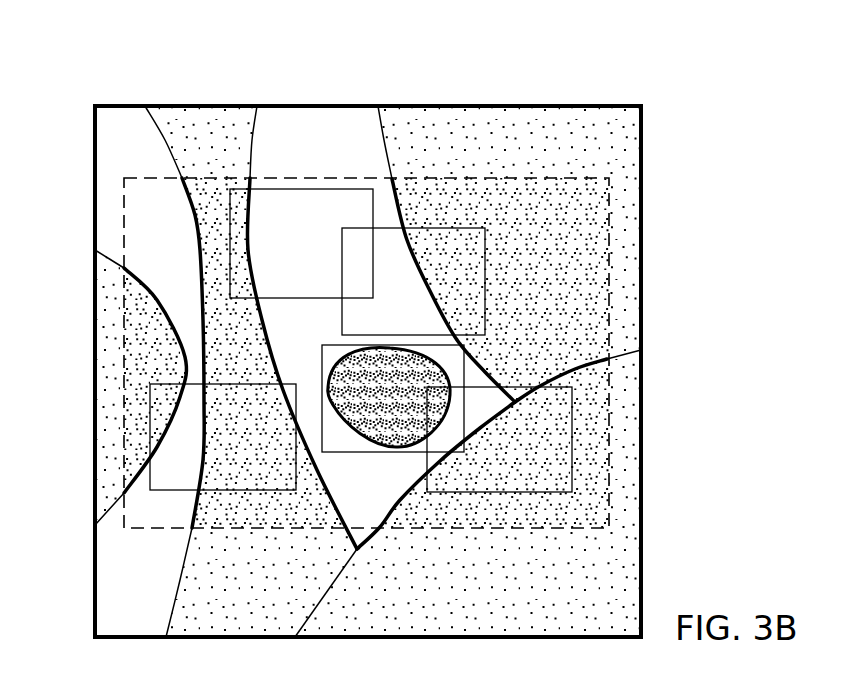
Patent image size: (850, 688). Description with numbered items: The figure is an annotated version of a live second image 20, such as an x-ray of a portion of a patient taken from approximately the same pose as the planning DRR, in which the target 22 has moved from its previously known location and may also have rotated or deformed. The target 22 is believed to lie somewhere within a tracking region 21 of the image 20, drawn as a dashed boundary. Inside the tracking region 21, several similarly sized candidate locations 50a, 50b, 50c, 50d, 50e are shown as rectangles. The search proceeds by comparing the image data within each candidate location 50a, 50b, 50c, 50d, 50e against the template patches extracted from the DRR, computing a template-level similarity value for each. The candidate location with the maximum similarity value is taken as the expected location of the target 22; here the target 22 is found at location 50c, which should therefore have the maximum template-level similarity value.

The second image 20 is at (111, 75).
The tracking region 21 is at (520, 172).
The target 22 is at (382, 412).
The location 50a is at (330, 189).
The location 50b is at (488, 270).
The location 50c is at (464, 368).
The location 50d is at (573, 428).
The location 50e is at (150, 425).